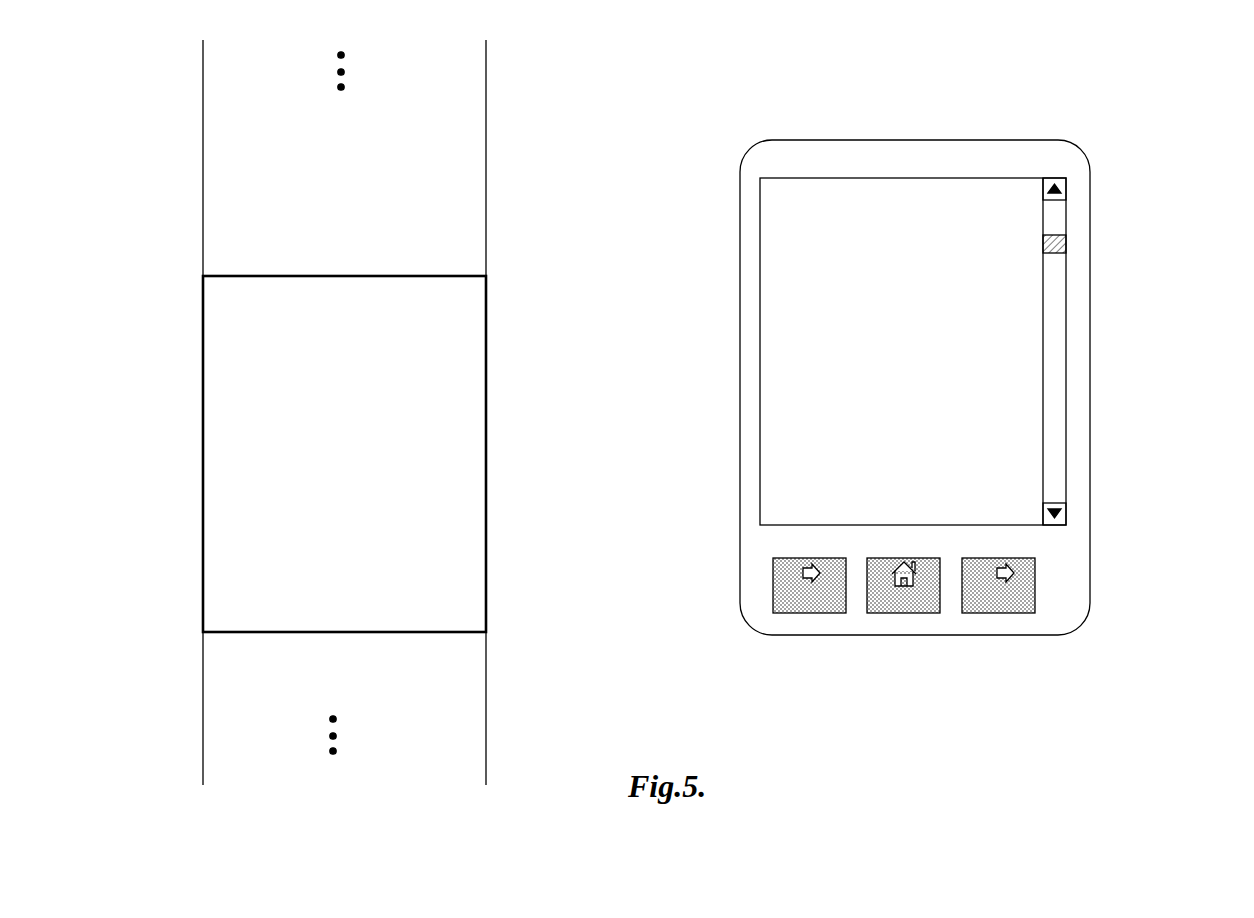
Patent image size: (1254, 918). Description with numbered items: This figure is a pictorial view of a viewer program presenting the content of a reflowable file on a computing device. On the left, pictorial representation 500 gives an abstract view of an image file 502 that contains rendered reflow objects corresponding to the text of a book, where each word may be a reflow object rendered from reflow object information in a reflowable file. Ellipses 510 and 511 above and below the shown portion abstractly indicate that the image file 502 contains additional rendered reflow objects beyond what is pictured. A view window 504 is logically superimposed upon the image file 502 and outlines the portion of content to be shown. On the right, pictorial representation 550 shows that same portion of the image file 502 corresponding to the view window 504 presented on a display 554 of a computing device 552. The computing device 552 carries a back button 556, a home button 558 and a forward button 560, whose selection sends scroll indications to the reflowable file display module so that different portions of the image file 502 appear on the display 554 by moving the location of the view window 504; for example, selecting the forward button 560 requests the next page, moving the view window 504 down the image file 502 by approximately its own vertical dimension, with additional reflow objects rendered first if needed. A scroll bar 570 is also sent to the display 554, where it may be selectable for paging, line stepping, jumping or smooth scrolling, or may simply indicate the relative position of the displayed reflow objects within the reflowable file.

The pictorial representation 500 is at (513, 86).
The image file 502 is at (487, 229).
The view window 504 is at (455, 631).
The ellipsis 510 is at (352, 64).
The ellipsis 511 is at (345, 734).
The pictorial representation 550 is at (919, 405).
The computing device 552 is at (1091, 218).
The display 554 is at (1005, 325).
The back button 556 is at (773, 588).
The home button 558 is at (889, 616).
The forward button 560 is at (1033, 583).
The scroll bar 570 is at (1055, 382).